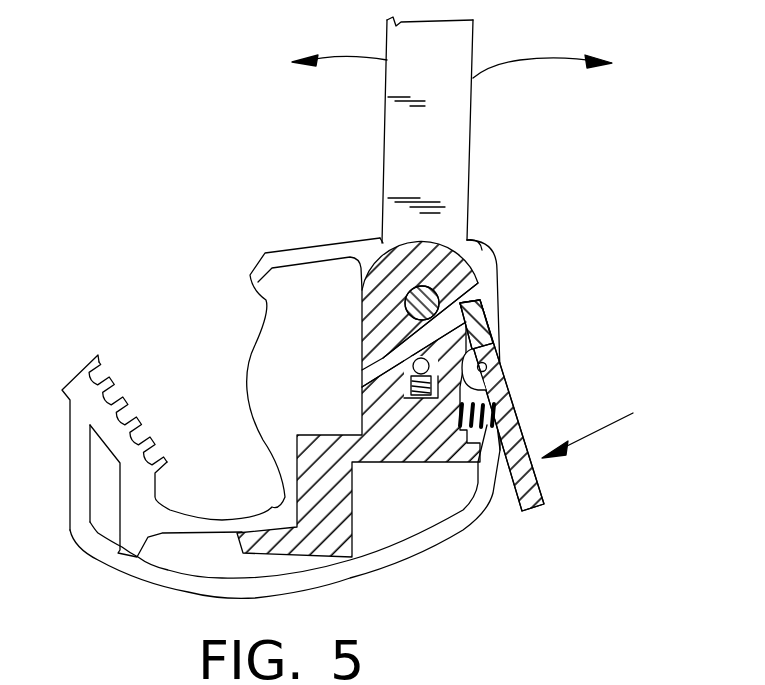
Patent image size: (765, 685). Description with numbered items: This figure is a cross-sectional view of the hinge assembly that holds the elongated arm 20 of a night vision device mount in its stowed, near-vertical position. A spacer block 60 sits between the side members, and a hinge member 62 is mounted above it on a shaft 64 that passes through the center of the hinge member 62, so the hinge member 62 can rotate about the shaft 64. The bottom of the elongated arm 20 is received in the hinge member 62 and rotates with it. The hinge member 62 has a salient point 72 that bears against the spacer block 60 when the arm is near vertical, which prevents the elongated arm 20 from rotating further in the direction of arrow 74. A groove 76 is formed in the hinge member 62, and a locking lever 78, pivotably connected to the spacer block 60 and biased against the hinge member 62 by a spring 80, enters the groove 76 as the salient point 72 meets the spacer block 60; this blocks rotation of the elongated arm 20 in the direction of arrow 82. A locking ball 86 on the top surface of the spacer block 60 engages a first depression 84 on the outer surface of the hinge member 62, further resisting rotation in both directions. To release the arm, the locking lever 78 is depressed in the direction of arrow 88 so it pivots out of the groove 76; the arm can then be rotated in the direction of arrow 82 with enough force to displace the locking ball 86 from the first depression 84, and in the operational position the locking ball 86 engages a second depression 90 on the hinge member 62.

The elongated arm 20 is at (453, 185).
The spacer block 60 is at (350, 537).
The hinge member 62 is at (386, 245).
The shaft 64 is at (439, 294).
The salient point 72 is at (360, 367).
The arrow 74 is at (352, 60).
The groove 76 is at (458, 345).
The locking lever 78 is at (543, 493).
The spring 80 is at (505, 403).
The arrow 82 is at (545, 57).
The first depression 84 is at (420, 358).
The locking ball 86 is at (404, 380).
The arrow 88 is at (600, 431).
The second depression 90 is at (473, 232).